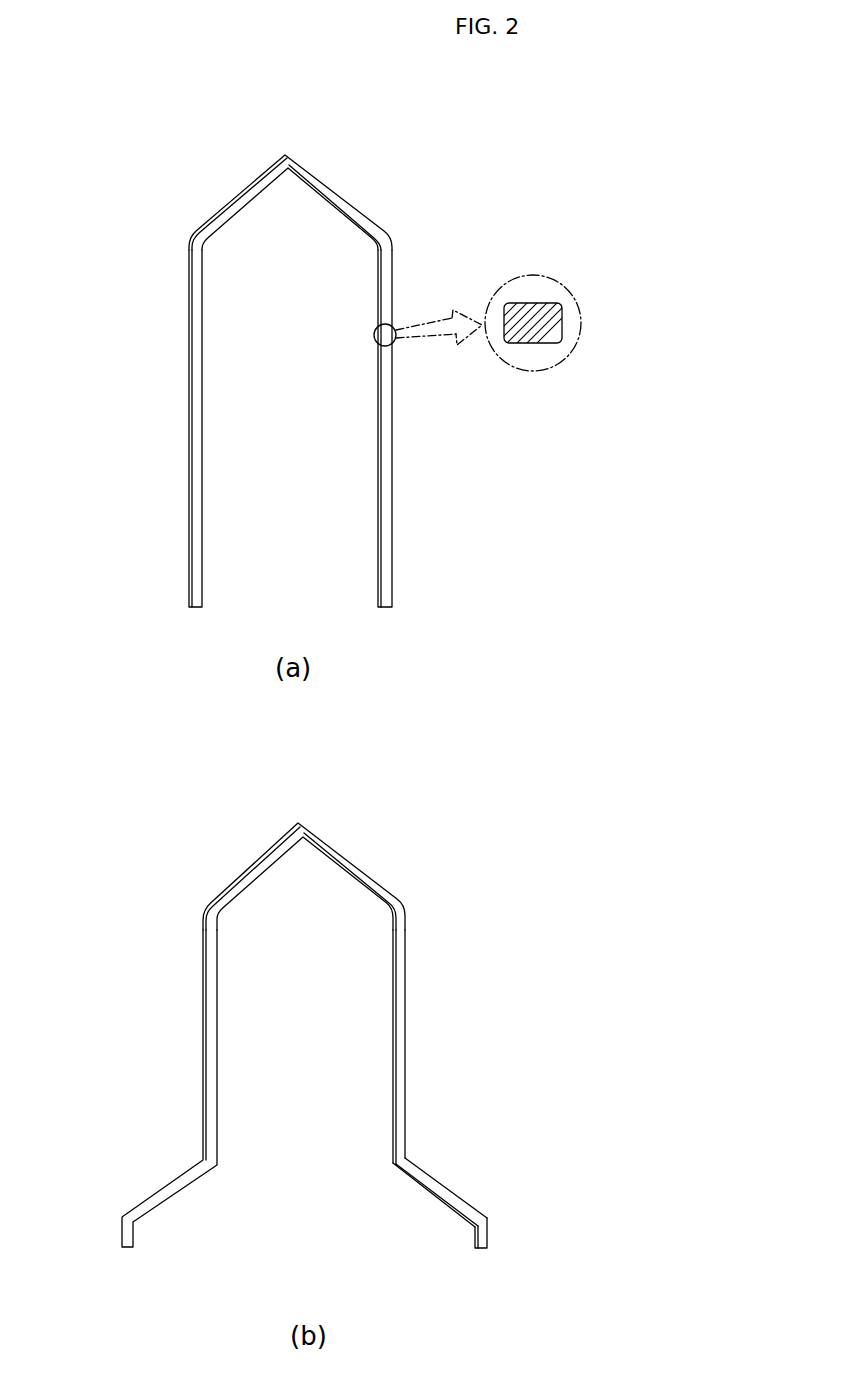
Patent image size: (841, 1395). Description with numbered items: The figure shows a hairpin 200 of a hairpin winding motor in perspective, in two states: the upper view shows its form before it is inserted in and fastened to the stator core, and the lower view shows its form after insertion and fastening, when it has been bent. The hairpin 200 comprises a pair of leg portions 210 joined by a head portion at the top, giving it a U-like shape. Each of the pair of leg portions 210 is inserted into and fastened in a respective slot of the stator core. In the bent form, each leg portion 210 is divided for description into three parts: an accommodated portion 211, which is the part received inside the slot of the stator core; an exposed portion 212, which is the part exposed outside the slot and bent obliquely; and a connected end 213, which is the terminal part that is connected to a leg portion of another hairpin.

The hairpin 200 is at (315, 677).
The leg portion 210 is at (193, 490).
The accommodated portion 211 is at (418, 908).
The exposed portion 212 is at (492, 1207).
The connected end 213 is at (492, 1212).